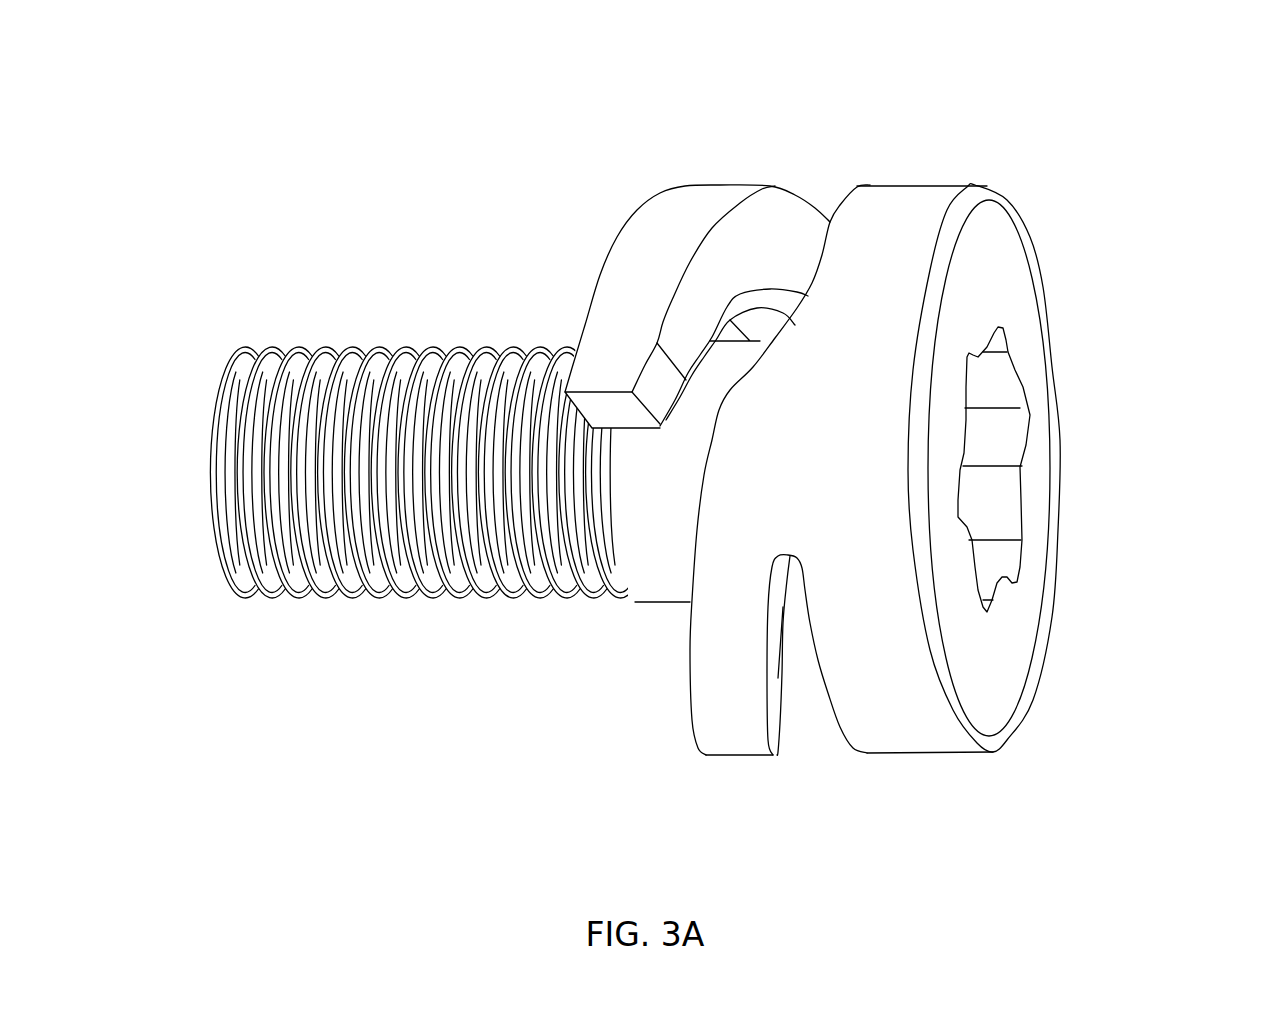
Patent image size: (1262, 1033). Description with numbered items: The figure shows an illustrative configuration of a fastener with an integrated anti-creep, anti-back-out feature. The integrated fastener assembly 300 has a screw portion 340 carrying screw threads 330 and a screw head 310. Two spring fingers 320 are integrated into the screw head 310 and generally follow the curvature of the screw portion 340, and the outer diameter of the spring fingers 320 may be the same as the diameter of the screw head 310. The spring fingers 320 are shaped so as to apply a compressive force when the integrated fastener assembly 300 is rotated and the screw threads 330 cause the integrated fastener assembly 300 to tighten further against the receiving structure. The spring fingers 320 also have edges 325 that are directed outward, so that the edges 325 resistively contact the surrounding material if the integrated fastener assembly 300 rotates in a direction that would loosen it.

The integrated fastener assembly 300 is at (1168, 104).
The screw head 310 is at (1057, 367).
The spring fingers 320 is at (703, 187).
The edges 325 is at (667, 383).
The screw threads 330 is at (343, 354).
The screw portion 340 is at (213, 454).